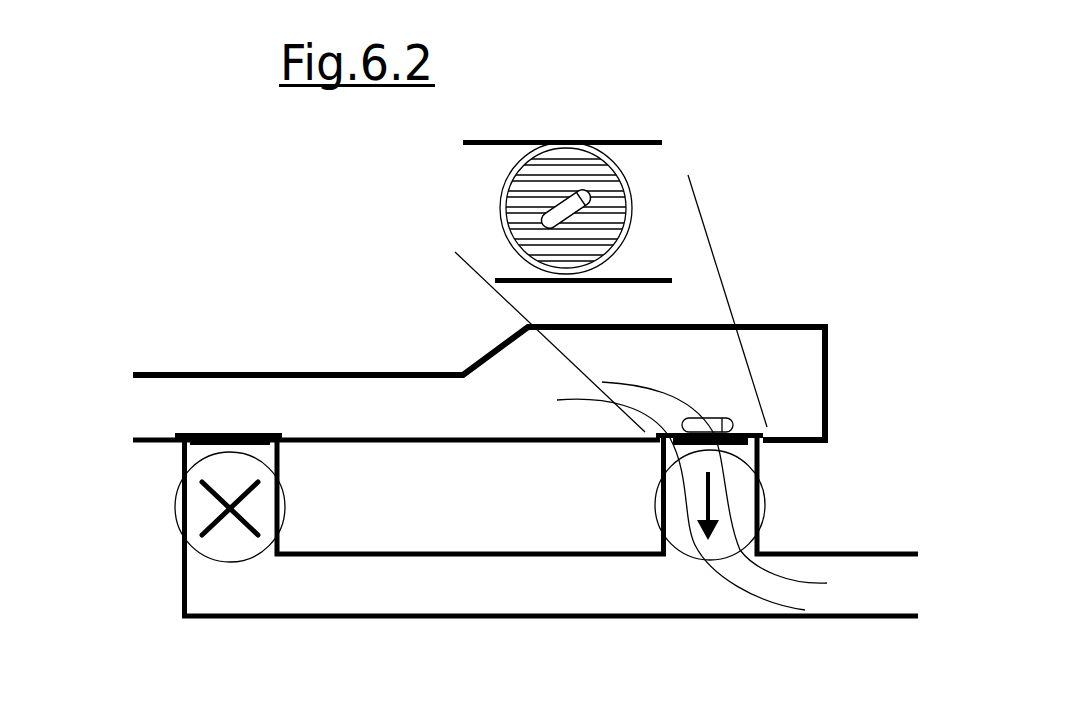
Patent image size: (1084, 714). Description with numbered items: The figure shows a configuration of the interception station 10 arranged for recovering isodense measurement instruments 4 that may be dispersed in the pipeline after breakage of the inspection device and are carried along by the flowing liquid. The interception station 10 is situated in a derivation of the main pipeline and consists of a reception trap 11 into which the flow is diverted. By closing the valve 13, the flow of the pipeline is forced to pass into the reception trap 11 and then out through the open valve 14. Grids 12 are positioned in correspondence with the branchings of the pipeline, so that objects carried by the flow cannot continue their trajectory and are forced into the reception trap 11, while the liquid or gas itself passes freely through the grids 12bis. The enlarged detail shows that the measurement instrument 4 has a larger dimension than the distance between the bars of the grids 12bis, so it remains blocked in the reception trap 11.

The interception station 10 is at (178, 238).
The reception trap 11 is at (522, 398).
The grids 12 is at (263, 452).
The grids 12bis is at (548, 177).
The valve 13 is at (188, 513).
The open valve 14 is at (738, 503).
The isodense measurement instrument 4 is at (562, 213).